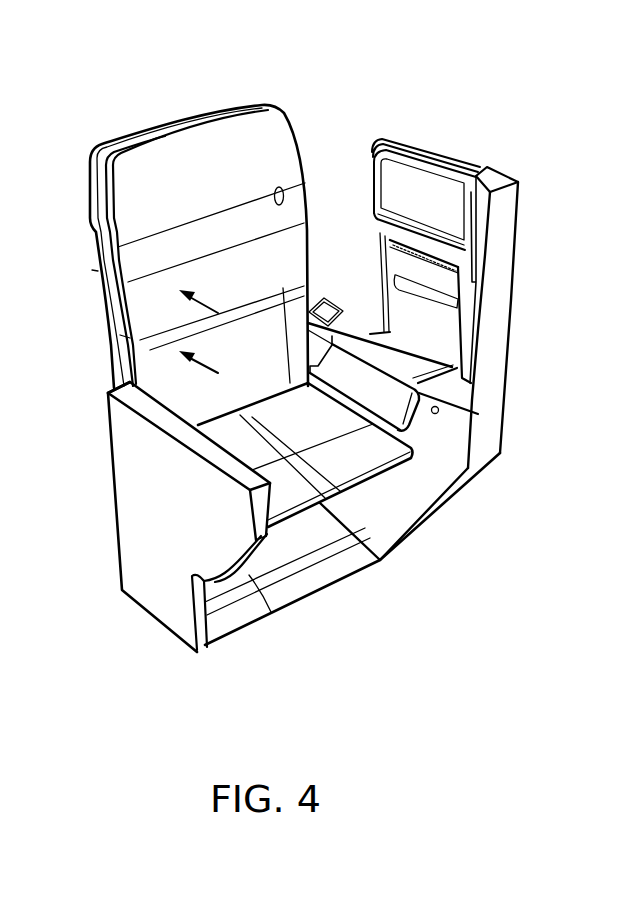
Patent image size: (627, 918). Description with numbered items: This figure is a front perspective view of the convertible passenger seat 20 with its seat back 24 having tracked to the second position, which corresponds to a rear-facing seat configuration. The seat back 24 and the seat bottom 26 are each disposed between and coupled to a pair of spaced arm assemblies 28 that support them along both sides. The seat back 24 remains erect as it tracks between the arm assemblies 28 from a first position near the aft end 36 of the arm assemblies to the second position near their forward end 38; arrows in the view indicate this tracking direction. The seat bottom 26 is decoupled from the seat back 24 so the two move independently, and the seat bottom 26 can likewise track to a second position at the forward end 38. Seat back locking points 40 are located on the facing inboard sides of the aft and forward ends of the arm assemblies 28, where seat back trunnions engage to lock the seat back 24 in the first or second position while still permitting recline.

The passenger seat 20 is at (523, 150).
The seat back 24 is at (280, 150).
The seat bottom 26 is at (343, 457).
The arm assemblies 28 is at (445, 455).
The aft end 36 is at (270, 538).
The forward end 38 is at (98, 389).
The seat back locking points 40 is at (439, 412).